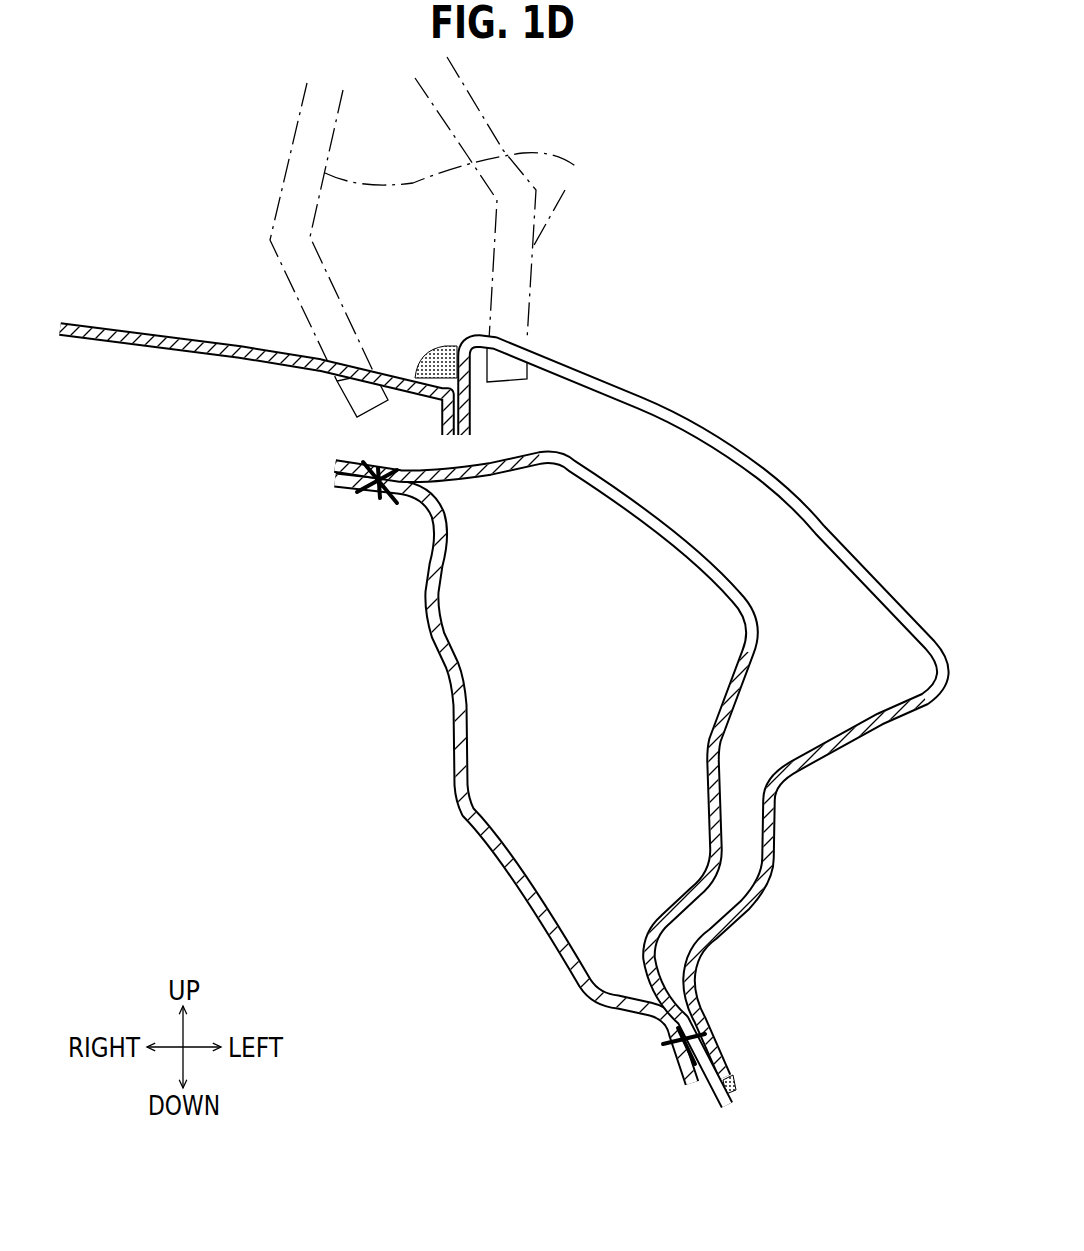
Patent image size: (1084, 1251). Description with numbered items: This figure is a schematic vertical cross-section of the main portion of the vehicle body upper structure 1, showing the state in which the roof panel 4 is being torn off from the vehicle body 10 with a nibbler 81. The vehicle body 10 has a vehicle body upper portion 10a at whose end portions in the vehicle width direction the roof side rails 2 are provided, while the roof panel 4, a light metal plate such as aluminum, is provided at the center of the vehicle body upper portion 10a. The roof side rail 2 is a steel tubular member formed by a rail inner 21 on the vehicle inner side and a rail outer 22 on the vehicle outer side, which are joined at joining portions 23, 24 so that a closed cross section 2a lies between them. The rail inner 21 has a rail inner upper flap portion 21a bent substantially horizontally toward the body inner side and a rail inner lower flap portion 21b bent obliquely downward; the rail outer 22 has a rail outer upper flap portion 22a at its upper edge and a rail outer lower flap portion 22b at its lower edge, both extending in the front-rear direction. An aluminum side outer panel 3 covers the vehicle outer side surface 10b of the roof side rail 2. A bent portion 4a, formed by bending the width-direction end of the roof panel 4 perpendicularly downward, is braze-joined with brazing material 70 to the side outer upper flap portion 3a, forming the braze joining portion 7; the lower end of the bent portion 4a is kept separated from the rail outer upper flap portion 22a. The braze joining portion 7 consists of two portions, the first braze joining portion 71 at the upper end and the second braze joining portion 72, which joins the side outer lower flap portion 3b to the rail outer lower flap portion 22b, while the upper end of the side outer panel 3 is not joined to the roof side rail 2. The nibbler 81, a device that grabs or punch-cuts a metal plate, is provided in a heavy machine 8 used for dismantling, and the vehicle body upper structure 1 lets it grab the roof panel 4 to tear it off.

The vehicle body upper structure 1 is at (900, 294).
The vehicle body 10 is at (501, 670).
The vehicle body upper portion 10a is at (92, 304).
The vehicle outer side surface 10b is at (720, 840).
The side outer panel 3 is at (842, 515).
The side outer upper flap portion 3a is at (470, 400).
The side outer lower flap portion 3b is at (718, 1040).
The roof panel 4 is at (199, 326).
The bent portion 4a is at (442, 428).
The roof side rail 2 is at (573, 813).
The closed cross section 2a is at (614, 721).
The rail inner 21 is at (455, 722).
The rail inner upper flap portion 21a is at (345, 500).
The rail inner lower flap portion 21b is at (692, 1088).
The rail outer 22 is at (705, 742).
The rail outer upper flap portion 22a is at (342, 460).
The rail outer lower flap portion 22b is at (722, 1110).
The joining portion 23 is at (379, 492).
The joining portion 24 is at (672, 1050).
The braze joining portion 7 is at (558, 616).
The first braze joining portion 71 is at (410, 346).
The second braze joining portion 72 is at (750, 1101).
The brazing material 70 is at (442, 342).
The heavy machine 8 is at (514, 117).
The nibbler 81 is at (565, 190).